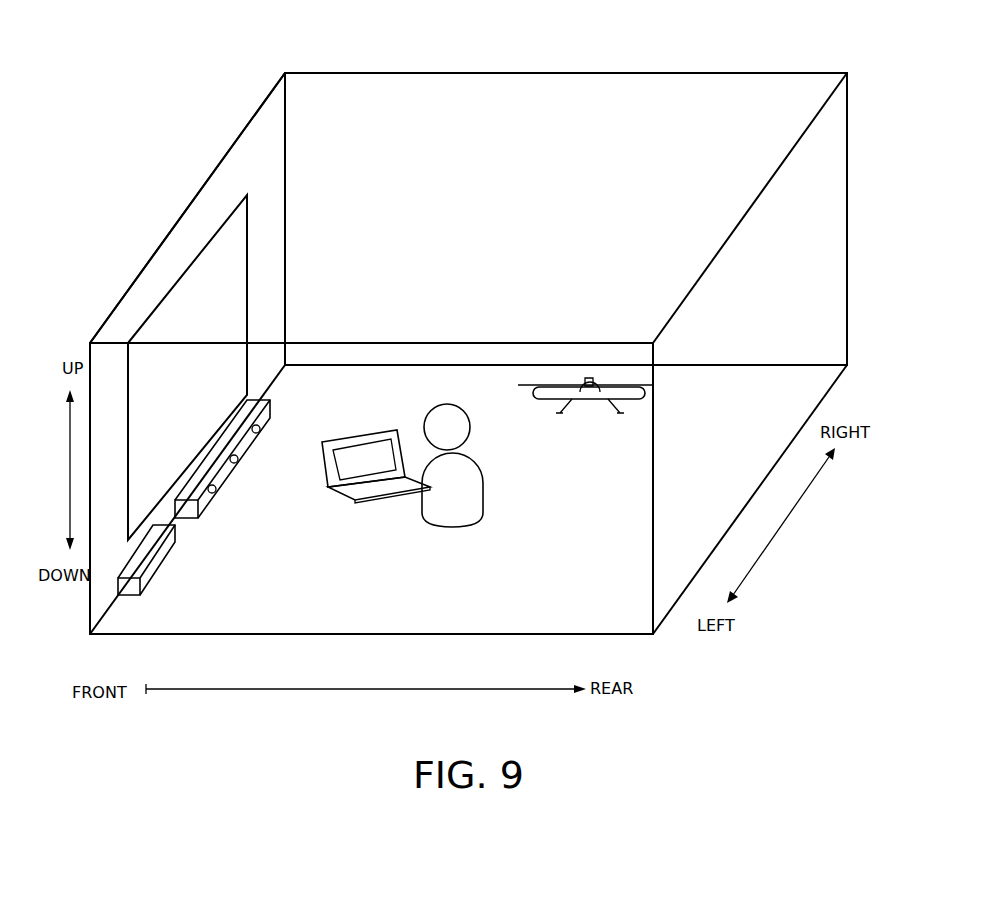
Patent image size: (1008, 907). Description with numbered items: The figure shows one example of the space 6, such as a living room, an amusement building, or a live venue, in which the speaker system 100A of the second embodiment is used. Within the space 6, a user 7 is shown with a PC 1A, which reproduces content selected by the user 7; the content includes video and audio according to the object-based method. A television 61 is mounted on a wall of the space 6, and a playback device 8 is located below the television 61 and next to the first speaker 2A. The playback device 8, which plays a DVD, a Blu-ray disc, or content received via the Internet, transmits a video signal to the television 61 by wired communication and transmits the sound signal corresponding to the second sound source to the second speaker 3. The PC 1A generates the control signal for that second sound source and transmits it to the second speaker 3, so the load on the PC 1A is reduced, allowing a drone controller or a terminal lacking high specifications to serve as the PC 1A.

The speaker system 100A is at (513, 54).
The space 6 is at (343, 210).
The television 61 is at (173, 297).
The sensor bar / camera unit 2A is at (189, 519).
The playback device 8 is at (138, 596).
The PC 1A is at (340, 495).
The user 7 is at (473, 432).
The second speaker 3 is at (605, 411).